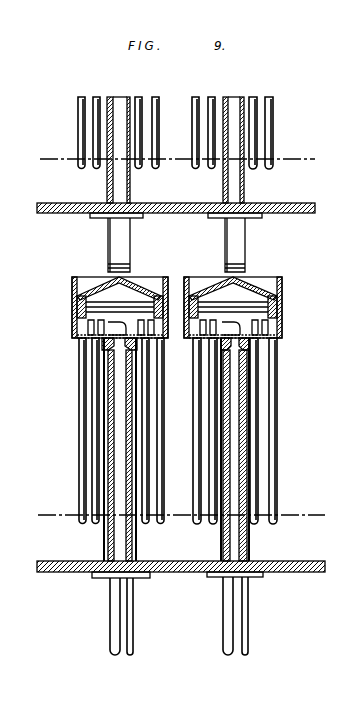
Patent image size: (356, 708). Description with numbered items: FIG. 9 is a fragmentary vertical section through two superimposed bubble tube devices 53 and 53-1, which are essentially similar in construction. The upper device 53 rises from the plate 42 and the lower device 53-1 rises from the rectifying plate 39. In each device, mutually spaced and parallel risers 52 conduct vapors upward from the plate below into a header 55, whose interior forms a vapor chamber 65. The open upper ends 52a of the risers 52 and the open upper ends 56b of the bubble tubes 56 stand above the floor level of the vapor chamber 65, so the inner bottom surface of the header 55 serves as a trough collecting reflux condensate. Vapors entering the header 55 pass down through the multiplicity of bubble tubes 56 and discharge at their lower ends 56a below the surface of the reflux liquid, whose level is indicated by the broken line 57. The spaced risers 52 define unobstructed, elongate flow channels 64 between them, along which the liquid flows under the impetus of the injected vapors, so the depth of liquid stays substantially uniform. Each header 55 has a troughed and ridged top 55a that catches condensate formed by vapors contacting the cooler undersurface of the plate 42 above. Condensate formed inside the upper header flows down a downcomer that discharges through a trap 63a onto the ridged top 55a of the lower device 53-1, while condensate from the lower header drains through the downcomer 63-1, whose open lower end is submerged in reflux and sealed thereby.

The rectifying plate 39 is at (56, 561).
The plate 42 is at (46, 203).
The riser 52 is at (112, 96).
The open upper end of riser 52a is at (78, 321).
The bubble tube device 53 is at (72, 94).
The bubble tube device 53-1 is at (72, 289).
The header 55 is at (80, 313).
The troughed and ridged top 55a is at (100, 300).
The bubble tube 56 is at (93, 140).
The lower discharge end of bubble tube 56a is at (170, 166).
The open upper end of bubble tube 56b is at (86, 325).
The liquid level 57 is at (297, 159).
The trap 63a is at (130, 236).
The downcomer 63-1 is at (223, 613).
The flow channel 64 is at (74, 202).
The vapor chamber 65 is at (76, 296).